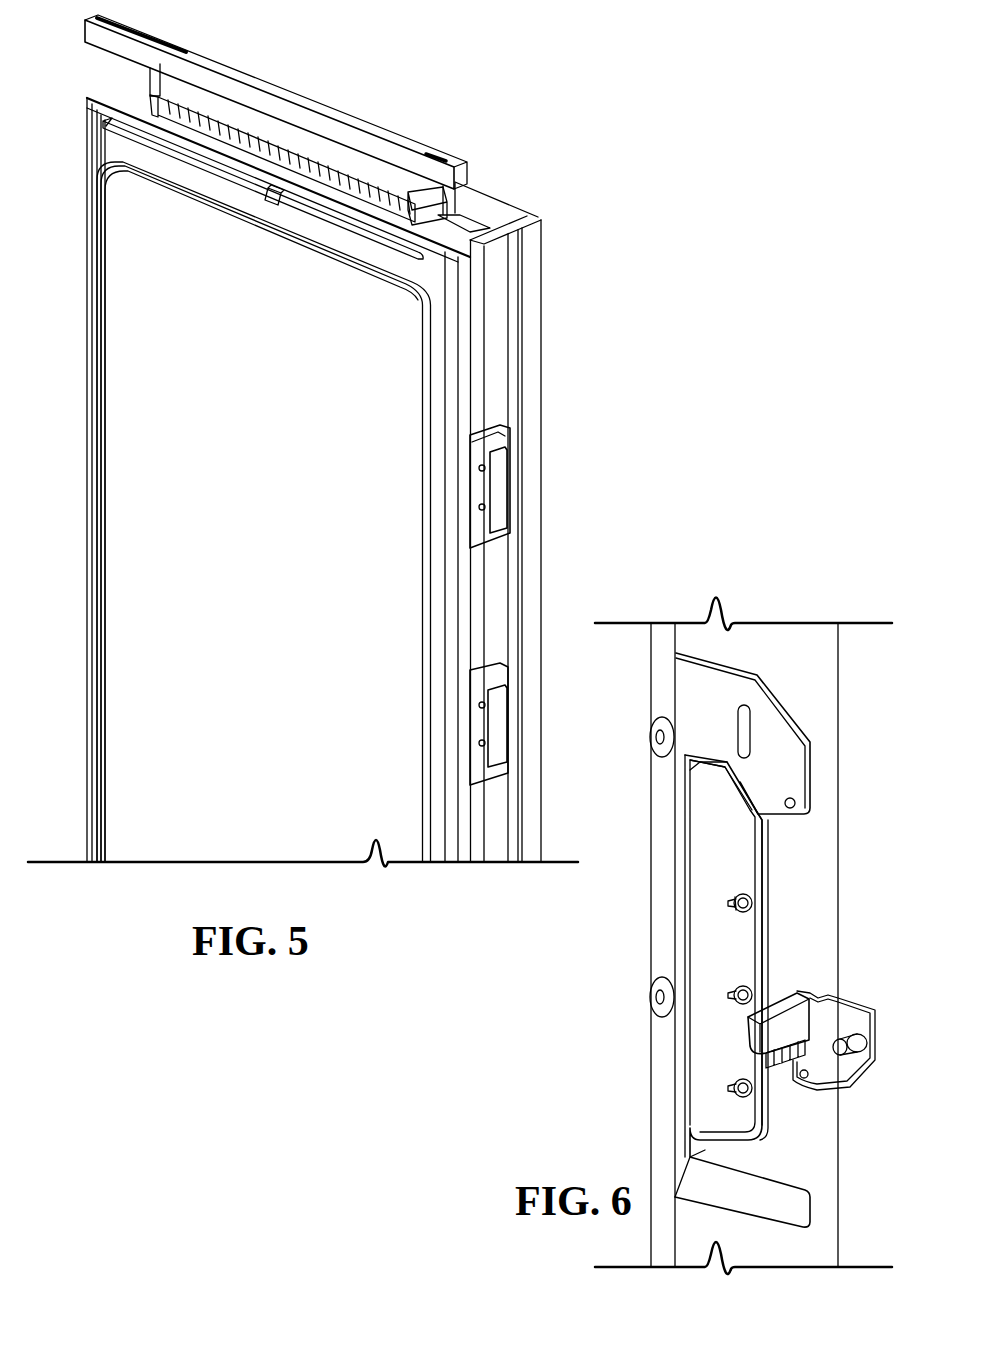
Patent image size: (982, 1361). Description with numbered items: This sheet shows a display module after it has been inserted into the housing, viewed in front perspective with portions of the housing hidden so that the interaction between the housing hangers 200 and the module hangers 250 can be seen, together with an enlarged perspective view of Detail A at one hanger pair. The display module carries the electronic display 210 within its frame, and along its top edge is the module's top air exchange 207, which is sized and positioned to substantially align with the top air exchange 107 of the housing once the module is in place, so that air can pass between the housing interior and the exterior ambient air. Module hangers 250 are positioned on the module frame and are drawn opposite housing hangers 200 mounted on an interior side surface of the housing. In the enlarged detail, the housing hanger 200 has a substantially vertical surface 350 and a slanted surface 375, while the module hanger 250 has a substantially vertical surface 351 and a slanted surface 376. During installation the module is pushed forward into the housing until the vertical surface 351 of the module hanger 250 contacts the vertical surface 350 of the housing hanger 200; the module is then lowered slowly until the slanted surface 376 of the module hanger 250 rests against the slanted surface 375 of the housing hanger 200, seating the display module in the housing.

In FIG. 5, the top air exchange 107 is at (268, 153).
In FIG. 5, the top air exchange 207 is at (172, 152).
In FIG. 5, the electronic display 210 is at (382, 378).
In FIG. 5, the module hanger 250 is at (480, 488).
In FIG. 6, the module hanger 250 is at (713, 722).
In FIG. 5, the housing hanger 200 is at (494, 506).
In FIG. 6, the housing hanger 200 is at (713, 938).
In FIG. 6, the substantially vertical surface 350 is at (688, 888).
In FIG. 6, the substantially vertical surface 351 is at (688, 870).
In FIG. 6, the slanted surface 375 is at (757, 808).
In FIG. 6, the slanted surface 376 is at (742, 795).